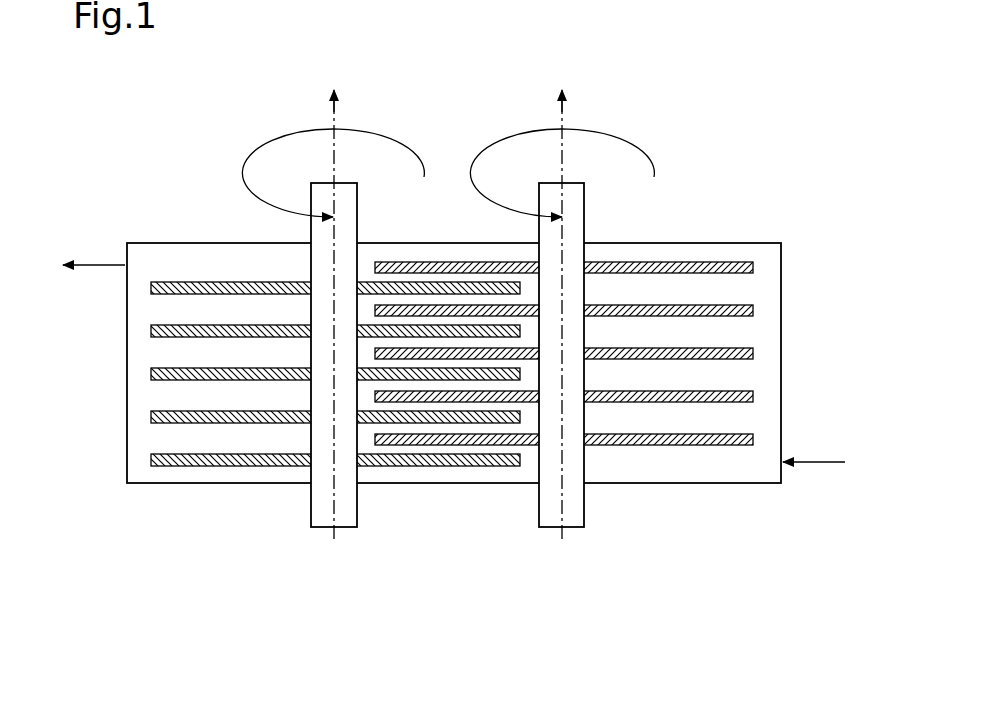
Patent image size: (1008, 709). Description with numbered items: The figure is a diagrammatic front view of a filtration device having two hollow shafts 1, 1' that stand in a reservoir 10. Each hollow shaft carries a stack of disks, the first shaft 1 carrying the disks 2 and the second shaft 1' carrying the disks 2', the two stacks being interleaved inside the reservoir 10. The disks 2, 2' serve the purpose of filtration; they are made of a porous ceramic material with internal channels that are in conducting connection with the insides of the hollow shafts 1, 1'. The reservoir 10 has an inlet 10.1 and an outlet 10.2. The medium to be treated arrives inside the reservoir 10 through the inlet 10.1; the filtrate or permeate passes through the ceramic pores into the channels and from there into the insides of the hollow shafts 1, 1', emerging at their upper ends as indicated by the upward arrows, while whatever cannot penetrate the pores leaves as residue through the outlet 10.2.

The hollow shaft 1 is at (333, 316).
The hollow shaft 1' is at (562, 316).
The disks 2 is at (286, 374).
The disks 2' is at (616, 353).
The reservoir 10 is at (783, 395).
The inlet 10.1 is at (825, 458).
The outlet 10.2 is at (93, 265).